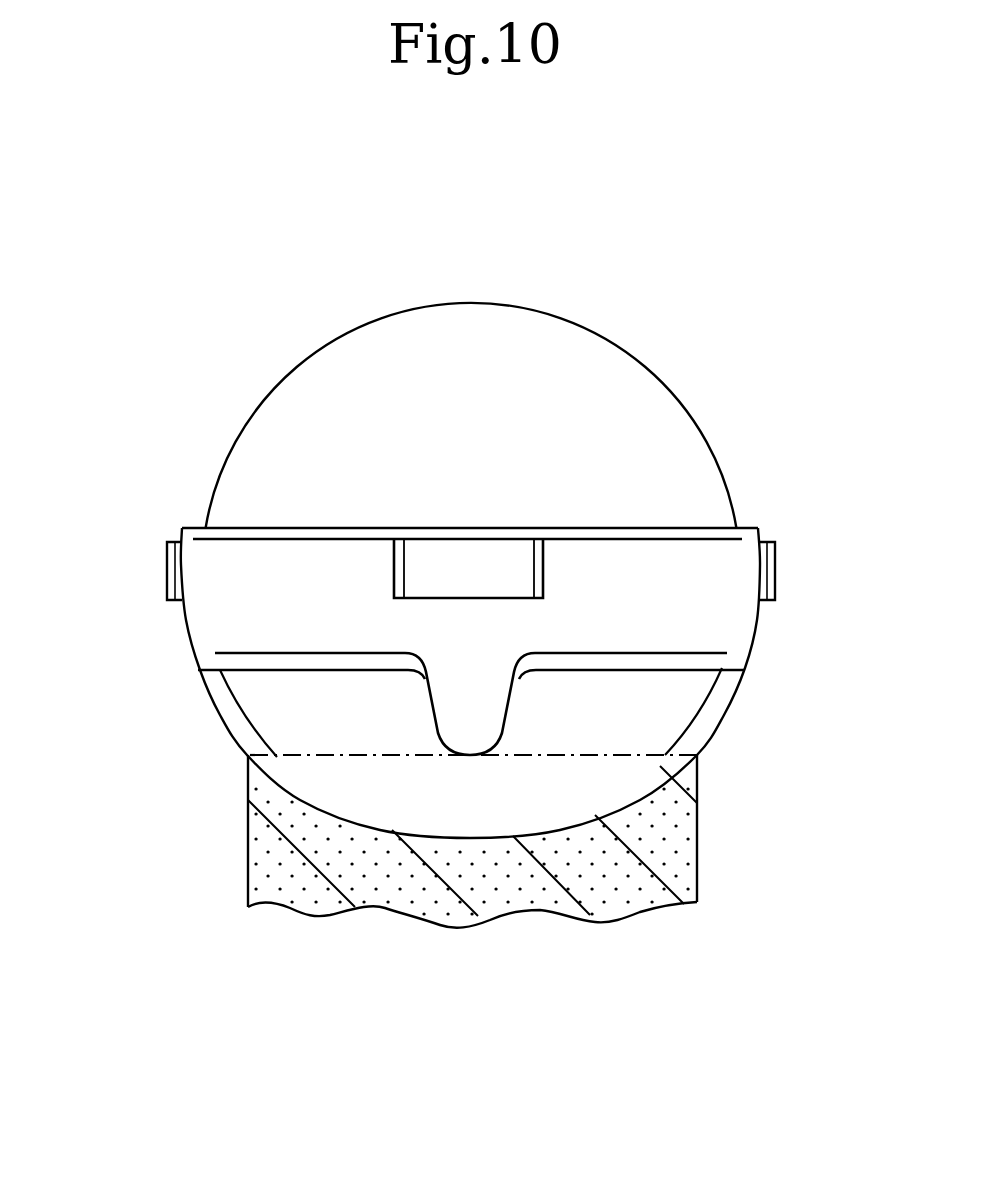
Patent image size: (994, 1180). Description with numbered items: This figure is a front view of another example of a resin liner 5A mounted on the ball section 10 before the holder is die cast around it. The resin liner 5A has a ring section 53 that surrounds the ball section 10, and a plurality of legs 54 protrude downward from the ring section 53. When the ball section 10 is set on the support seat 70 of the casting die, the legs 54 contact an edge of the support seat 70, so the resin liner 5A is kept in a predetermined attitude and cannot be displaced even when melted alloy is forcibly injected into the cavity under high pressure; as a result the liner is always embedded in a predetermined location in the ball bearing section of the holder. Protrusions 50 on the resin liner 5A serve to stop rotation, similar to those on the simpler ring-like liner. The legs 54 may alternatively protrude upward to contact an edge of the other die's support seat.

The ball section 10 is at (617, 382).
The protrusions for stopping rotation 50 is at (472, 560).
The ring section 53 is at (283, 570).
The resin liner 5A is at (677, 601).
The legs 54 is at (226, 703).
The support seat 70 is at (680, 842).